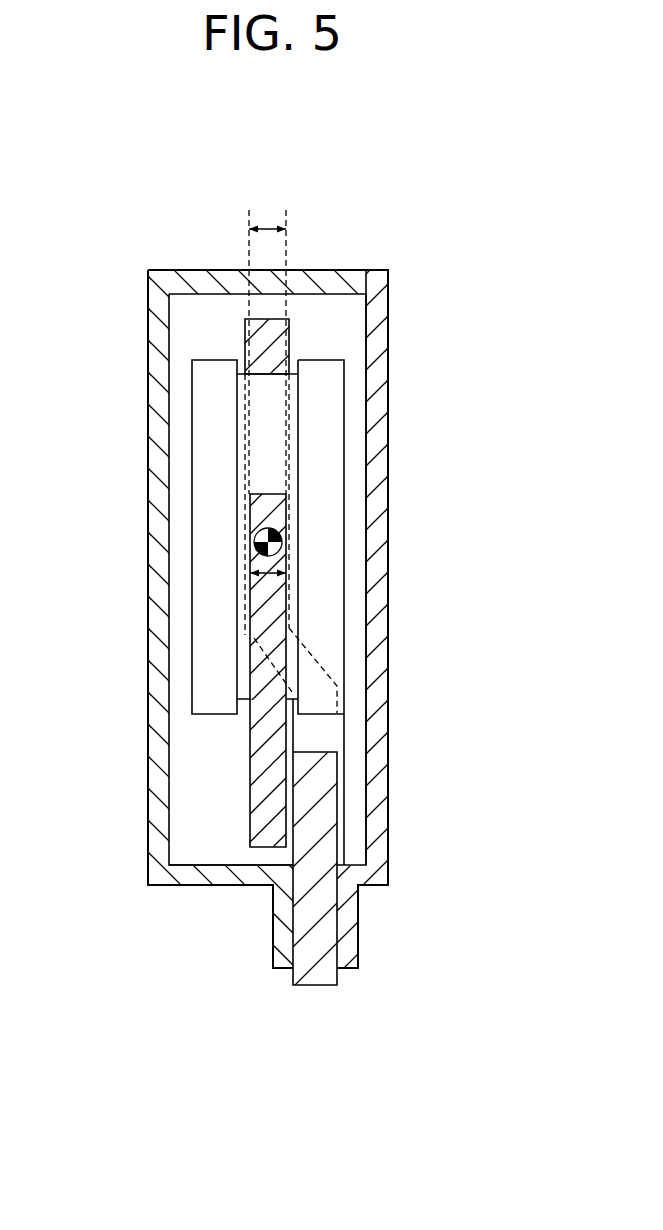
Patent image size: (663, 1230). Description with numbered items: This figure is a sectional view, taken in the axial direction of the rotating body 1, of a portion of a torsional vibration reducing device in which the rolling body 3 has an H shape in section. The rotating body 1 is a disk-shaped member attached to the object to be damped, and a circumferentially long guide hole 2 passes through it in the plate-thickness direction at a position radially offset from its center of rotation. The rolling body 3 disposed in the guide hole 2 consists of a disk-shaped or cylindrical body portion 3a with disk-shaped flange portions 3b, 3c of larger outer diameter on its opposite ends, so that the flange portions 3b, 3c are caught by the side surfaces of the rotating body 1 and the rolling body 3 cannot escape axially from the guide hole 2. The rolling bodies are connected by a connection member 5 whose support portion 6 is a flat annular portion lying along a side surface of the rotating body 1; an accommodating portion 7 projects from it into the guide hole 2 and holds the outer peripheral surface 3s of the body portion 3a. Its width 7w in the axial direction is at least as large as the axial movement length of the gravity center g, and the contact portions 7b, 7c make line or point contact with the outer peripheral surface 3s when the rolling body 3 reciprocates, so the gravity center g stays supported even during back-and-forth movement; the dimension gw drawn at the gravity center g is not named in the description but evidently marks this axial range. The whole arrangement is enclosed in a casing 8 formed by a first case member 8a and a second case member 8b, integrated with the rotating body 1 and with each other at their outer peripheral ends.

The rotating body 1 is at (317, 967).
The guide hole 2 is at (268, 855).
The rolling body 3 is at (277, 587).
The body portion 3a is at (273, 403).
The flange portion 3b is at (212, 423).
The flange portion 3c is at (327, 416).
The outer peripheral surface 3s is at (293, 715).
The connection member 5 is at (253, 503).
The support portion 6 is at (268, 822).
The accommodating portion 7 is at (253, 447).
The contact portion 7b is at (253, 601).
The contact portion 7c is at (253, 601).
The width of the accommodating portion 7w is at (270, 224).
The casing 8 is at (276, 570).
The first case member 8a is at (333, 281).
The second case member 8b is at (323, 214).
The gravity center g is at (283, 531).
The center of gravity width gw is at (283, 577).